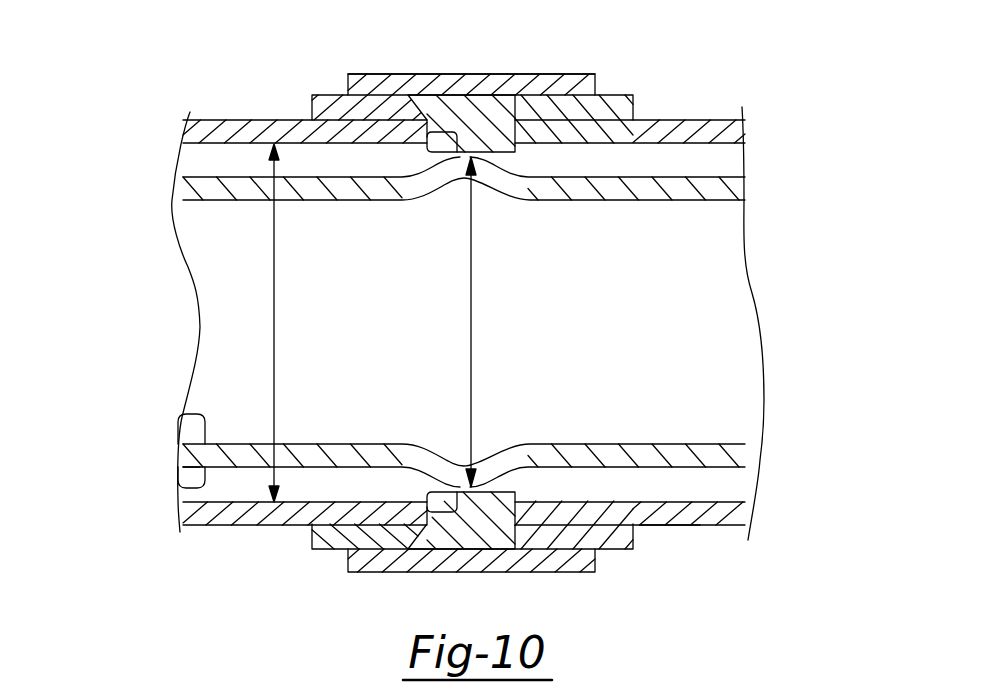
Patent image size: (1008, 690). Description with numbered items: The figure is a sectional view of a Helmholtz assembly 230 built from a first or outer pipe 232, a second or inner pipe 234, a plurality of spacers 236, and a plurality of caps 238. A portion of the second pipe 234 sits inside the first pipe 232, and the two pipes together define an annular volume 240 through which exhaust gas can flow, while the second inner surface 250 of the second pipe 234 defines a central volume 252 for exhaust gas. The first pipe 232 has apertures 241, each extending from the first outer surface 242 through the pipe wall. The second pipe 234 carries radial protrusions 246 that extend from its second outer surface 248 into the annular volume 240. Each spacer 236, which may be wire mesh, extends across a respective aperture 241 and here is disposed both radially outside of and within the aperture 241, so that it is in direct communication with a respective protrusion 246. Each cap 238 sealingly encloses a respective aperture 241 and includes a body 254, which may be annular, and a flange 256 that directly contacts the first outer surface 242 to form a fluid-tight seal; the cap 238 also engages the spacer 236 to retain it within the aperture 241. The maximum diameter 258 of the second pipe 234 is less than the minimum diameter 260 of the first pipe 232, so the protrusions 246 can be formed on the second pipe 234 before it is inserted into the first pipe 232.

The Helmholtz assembly 230 is at (164, 89).
The first pipe 232 is at (727, 135).
The second pipe 234 is at (727, 192).
The spacer 236 is at (470, 132).
The cap 238 is at (495, 85).
The annular volume 240 is at (213, 162).
The aperture 241 is at (458, 160).
The first outer surface 242 is at (672, 525).
The radial protrusion 246 is at (508, 478).
The second outer surface 248 is at (182, 486).
The second inner surface 250 is at (185, 415).
The central volume 252 is at (682, 308).
The body 254 is at (553, 74).
The flange 256 is at (622, 110).
The maximum diameter 258 is at (472, 362).
The minimum diameter 260 is at (272, 322).